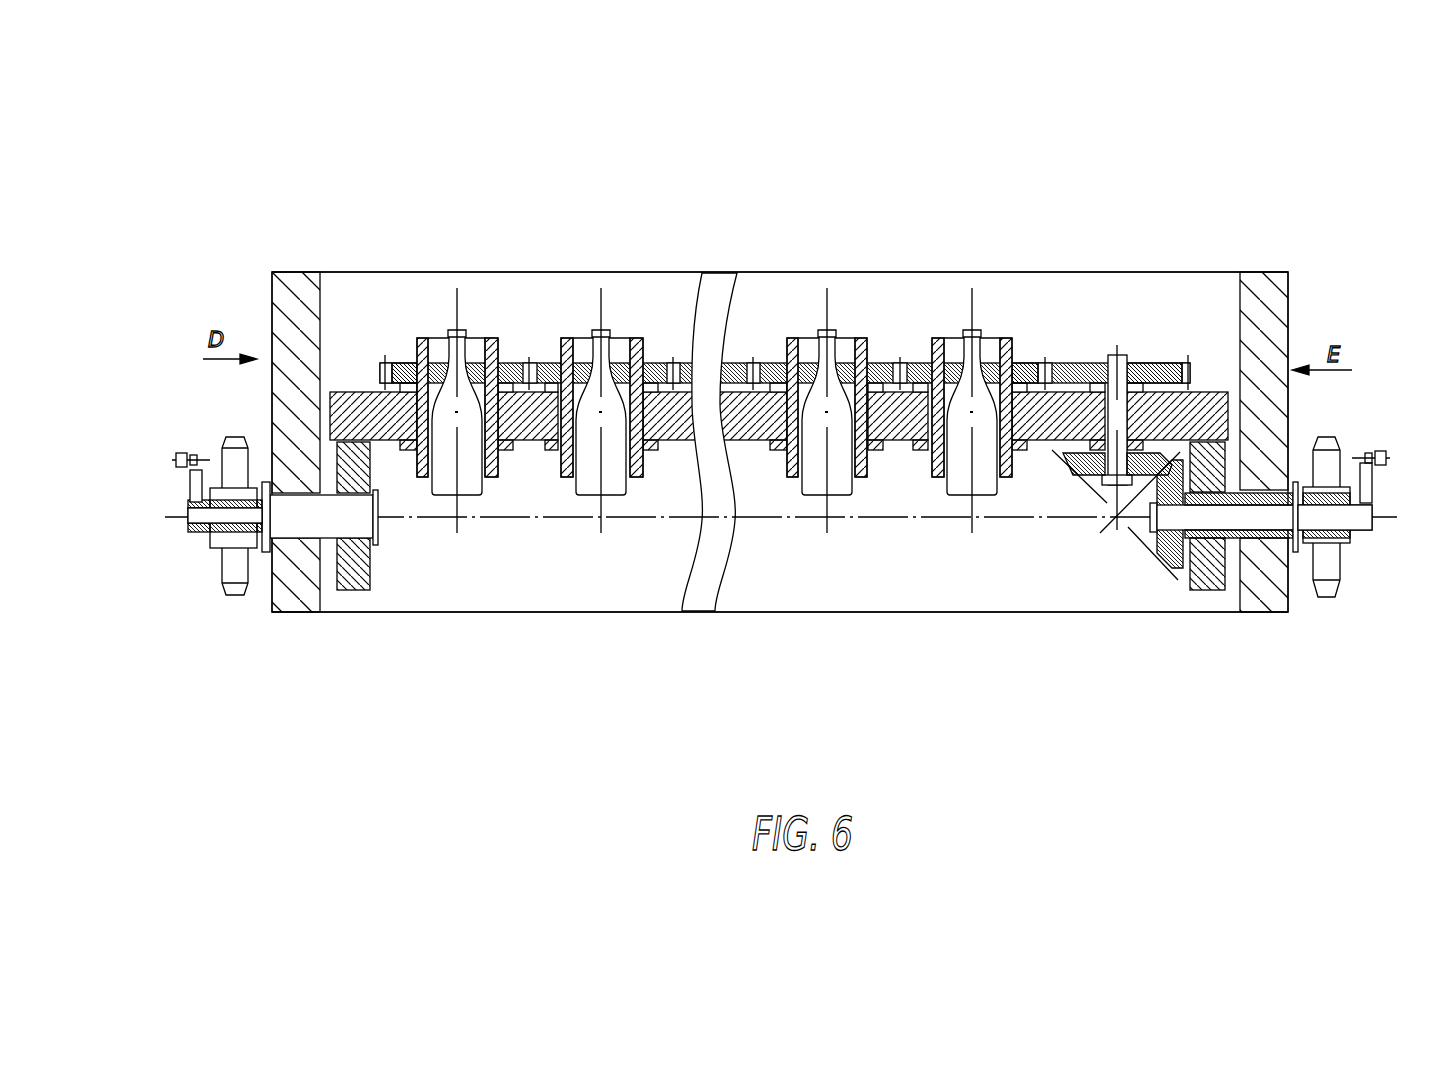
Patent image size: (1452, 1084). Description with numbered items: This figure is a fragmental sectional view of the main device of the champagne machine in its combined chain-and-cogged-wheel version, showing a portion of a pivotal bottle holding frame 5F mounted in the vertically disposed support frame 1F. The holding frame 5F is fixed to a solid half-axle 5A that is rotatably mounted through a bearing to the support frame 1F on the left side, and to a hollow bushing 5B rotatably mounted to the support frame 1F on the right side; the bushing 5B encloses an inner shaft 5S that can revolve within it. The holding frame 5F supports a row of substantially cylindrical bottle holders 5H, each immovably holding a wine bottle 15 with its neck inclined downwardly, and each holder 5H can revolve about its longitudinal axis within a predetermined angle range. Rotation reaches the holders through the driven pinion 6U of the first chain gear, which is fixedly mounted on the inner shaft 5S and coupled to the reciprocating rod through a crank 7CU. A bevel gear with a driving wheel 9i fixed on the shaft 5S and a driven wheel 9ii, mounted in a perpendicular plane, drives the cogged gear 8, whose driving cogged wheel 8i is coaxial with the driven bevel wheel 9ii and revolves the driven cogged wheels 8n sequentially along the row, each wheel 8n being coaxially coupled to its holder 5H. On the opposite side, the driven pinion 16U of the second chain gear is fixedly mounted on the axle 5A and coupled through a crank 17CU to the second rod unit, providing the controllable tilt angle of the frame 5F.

The support frame 1F is at (1267, 582).
The axle 5A is at (357, 523).
The bushing 5B is at (1240, 533).
The bottle holding frame 5F is at (355, 572).
The bottle holder 5H is at (790, 477).
The inner shaft 5S is at (1157, 518).
The upper driven pinion 6U is at (1327, 573).
The crank 7CU is at (1365, 493).
The cogged gear 8 is at (1063, 367).
The driving cogged wheel 8i is at (1143, 373).
The driven cogged wheel 8n is at (407, 367).
The driving bevel wheel 9i is at (1170, 567).
The driven bevel wheel 9ii is at (1073, 477).
The wine bottle 15 is at (843, 477).
The upper driven pinion 16U is at (235, 573).
The crank 17CU is at (198, 488).